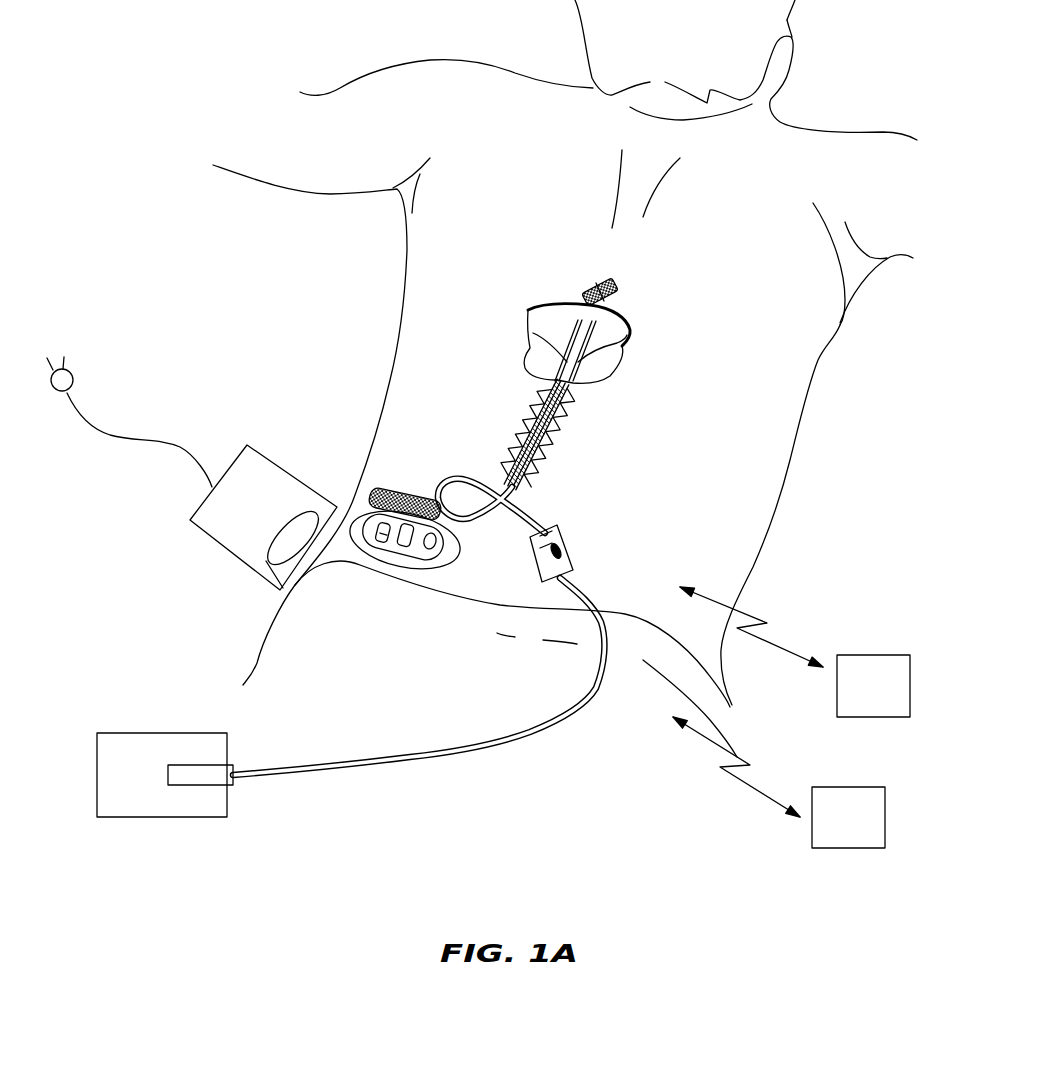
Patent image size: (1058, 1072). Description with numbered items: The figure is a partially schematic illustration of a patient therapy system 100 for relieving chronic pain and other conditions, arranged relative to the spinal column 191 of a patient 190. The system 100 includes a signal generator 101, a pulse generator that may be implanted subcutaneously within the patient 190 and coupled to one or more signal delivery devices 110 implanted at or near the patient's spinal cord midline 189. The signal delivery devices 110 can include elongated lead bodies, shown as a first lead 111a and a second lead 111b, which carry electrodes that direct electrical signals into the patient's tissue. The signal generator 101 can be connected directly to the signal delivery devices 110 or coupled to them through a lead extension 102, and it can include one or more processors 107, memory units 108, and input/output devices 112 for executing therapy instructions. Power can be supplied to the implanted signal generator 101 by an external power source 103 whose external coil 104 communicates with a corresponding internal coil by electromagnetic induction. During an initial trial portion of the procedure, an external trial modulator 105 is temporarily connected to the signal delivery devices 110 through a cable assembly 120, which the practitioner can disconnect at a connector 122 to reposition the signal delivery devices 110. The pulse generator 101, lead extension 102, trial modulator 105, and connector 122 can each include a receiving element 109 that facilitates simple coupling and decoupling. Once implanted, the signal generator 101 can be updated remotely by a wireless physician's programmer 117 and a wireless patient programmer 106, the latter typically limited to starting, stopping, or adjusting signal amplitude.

The patient therapy system 100 is at (200, 352).
The signal generator 101 is at (430, 586).
The lead extension 102 is at (472, 470).
The external power source 103 is at (192, 488).
The external coil 104 is at (252, 557).
The external trial modulator 105 is at (152, 733).
The wireless patient programmer 106 is at (877, 655).
The processor 107 is at (380, 568).
The memory unit 108 is at (432, 565).
The receiving element 109 is at (548, 524).
The signal delivery device 110 is at (577, 344).
The first lead 111a is at (557, 354).
The second lead 111b is at (590, 354).
The input/output device 112 is at (452, 557).
The wireless physician's programmer 117 is at (850, 787).
The cable assembly 120 is at (494, 758).
The connector 122 is at (567, 547).
The spinal cord midline 189 is at (607, 250).
The patient 190 is at (770, 470).
The spinal column 191 is at (580, 436).